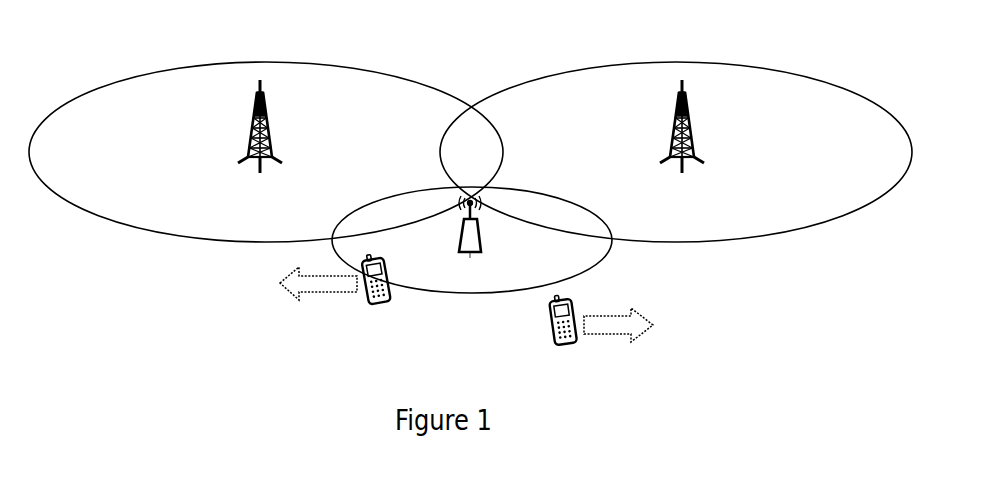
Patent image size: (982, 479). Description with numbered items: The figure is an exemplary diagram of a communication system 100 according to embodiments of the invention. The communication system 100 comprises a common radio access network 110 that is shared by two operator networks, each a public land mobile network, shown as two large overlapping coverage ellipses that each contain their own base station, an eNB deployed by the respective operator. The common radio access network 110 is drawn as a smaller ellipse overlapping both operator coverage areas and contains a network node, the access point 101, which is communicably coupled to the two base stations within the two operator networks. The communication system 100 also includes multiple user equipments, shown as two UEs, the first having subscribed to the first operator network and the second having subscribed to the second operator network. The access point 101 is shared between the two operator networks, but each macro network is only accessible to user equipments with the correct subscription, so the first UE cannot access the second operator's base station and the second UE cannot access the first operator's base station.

The communication system 100 is at (470, 205).
The common radio access network 110 is at (472, 240).
The access point 101 is at (478, 239).